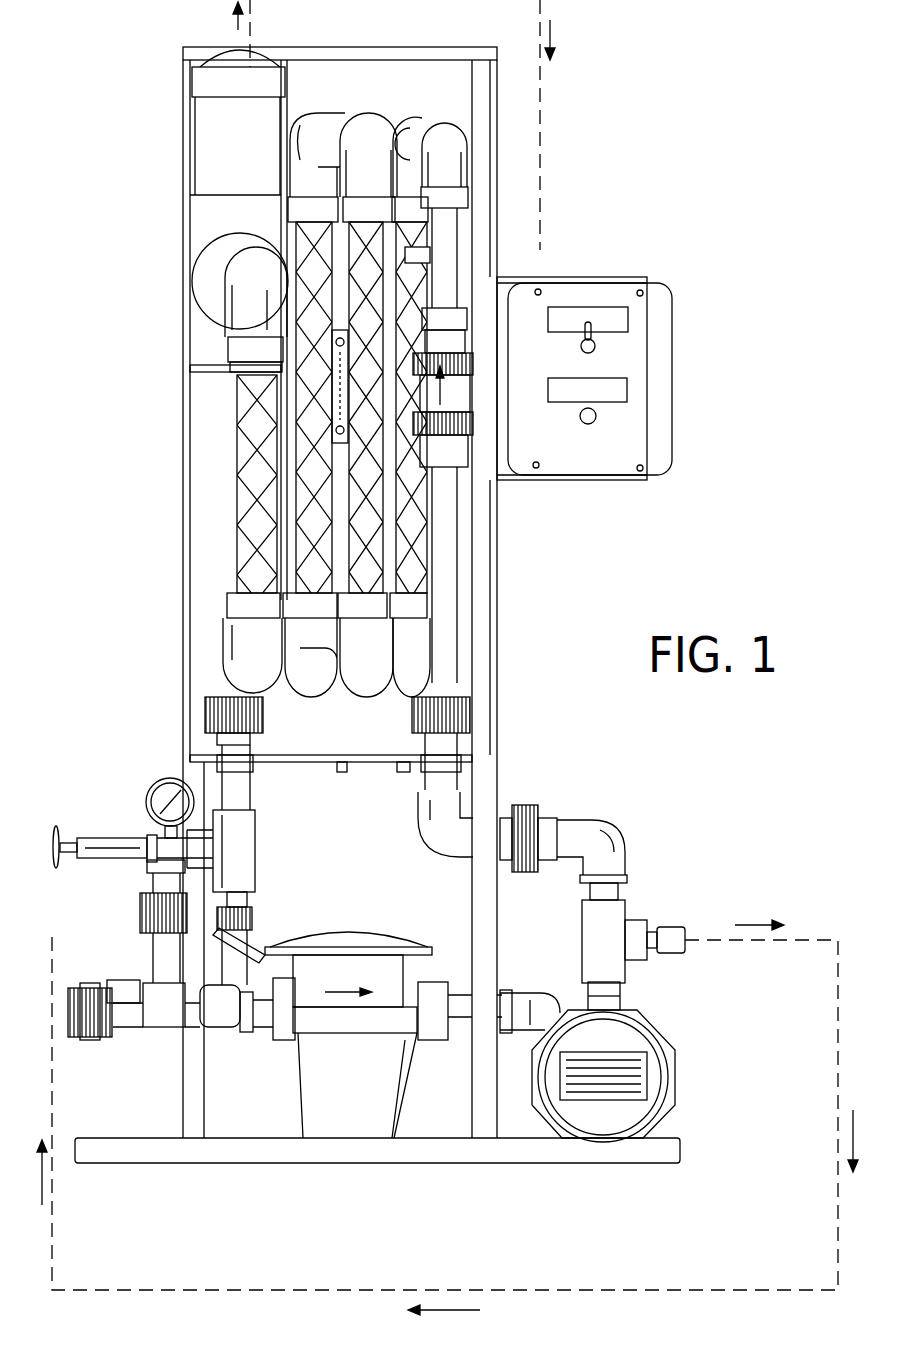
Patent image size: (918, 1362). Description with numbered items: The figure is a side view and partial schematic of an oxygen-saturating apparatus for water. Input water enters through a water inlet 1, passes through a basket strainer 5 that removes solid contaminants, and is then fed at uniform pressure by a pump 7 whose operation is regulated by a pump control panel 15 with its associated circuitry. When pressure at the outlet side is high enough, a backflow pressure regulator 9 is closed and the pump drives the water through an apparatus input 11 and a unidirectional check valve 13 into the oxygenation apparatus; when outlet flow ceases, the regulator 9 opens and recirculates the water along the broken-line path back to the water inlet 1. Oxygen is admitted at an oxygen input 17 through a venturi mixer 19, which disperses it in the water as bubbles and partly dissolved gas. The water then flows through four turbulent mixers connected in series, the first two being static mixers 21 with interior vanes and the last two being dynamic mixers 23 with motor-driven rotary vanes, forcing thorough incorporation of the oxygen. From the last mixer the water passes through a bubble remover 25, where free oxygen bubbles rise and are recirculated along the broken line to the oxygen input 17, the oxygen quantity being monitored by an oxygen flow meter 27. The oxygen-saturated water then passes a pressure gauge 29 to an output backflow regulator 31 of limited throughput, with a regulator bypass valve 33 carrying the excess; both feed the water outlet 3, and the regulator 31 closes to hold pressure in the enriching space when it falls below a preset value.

The water inlet 1 is at (107, 987).
The water outlet 3 is at (68, 1013).
The basket strainer 5 is at (403, 1080).
The pump 7 is at (668, 1052).
The backflow pressure regulator 9 is at (670, 928).
The apparatus input 11 is at (520, 806).
The check valve 13 is at (460, 468).
The pump control panel 15 is at (672, 356).
The oxygen input 17 is at (431, 250).
The venturi mixer 19 is at (452, 240).
The static mixers 21 is at (422, 556).
The dynamic mixers 23 is at (302, 572).
The bubble remover 25 is at (203, 87).
The oxygen flow meter 27 is at (330, 373).
The pressure gauge 29 is at (172, 778).
The output backflow regulator 31 is at (122, 840).
The regulator bypass valve 33 is at (232, 1030).